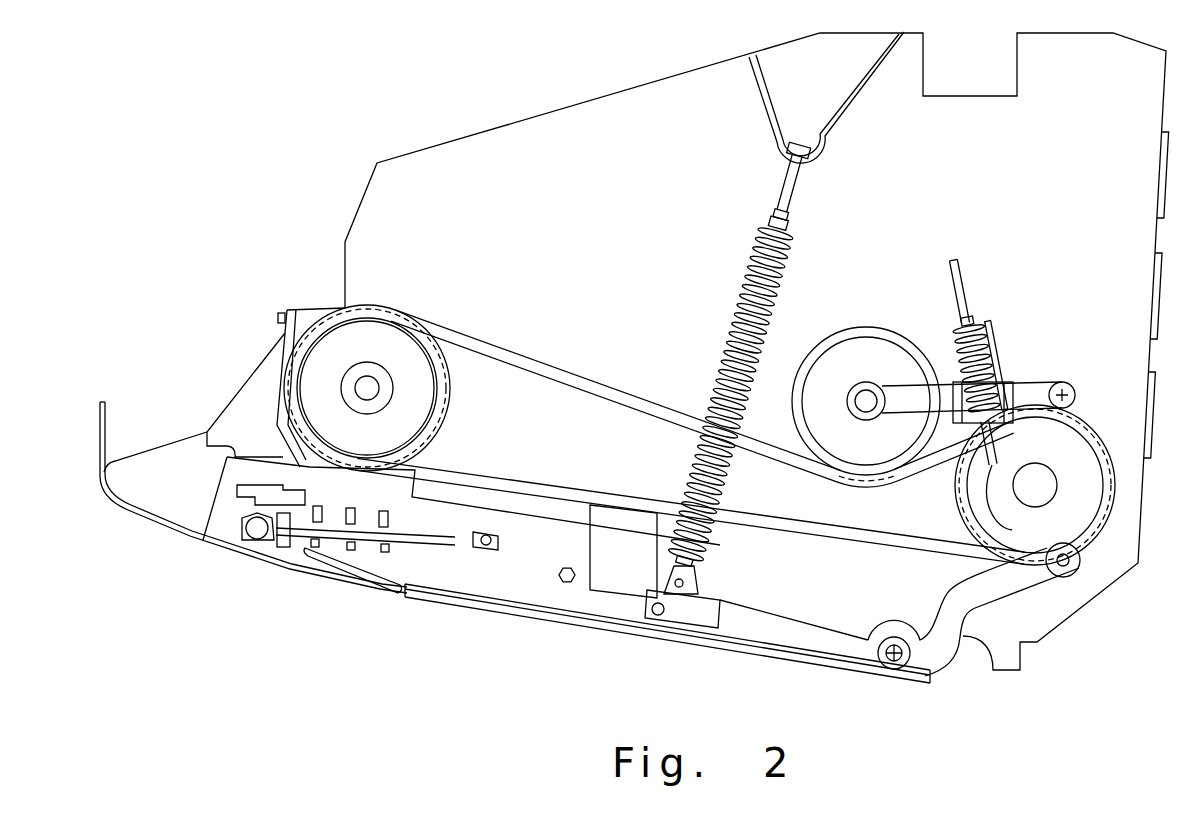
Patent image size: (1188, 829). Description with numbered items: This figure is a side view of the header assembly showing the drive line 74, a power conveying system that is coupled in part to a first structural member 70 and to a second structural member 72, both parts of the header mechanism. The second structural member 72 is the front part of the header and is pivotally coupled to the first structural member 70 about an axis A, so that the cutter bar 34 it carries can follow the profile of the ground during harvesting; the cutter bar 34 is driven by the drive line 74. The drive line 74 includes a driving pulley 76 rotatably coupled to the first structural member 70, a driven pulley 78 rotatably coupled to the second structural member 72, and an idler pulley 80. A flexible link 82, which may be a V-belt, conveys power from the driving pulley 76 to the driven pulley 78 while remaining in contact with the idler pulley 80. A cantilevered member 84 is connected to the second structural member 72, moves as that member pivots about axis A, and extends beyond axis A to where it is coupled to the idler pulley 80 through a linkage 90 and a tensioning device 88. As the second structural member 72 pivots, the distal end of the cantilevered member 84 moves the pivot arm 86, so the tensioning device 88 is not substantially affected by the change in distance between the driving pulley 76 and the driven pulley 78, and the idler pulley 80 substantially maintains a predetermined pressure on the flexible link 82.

The first structural member 70 is at (1073, 223).
The drive line 74 is at (584, 280).
The flexible link 82 is at (568, 368).
The driven pulley 78 is at (452, 400).
The idler pulley 80 is at (868, 328).
The driving pulley 76 is at (957, 500).
The pivot arm 86 is at (1034, 383).
The tensioning device 88 is at (977, 322).
The linkage 90 is at (1000, 455).
The cantilevered member 84 is at (993, 672).
The second structural member 72 is at (490, 606).
The cutter bar 34 is at (287, 588).
The axis A is at (893, 667).